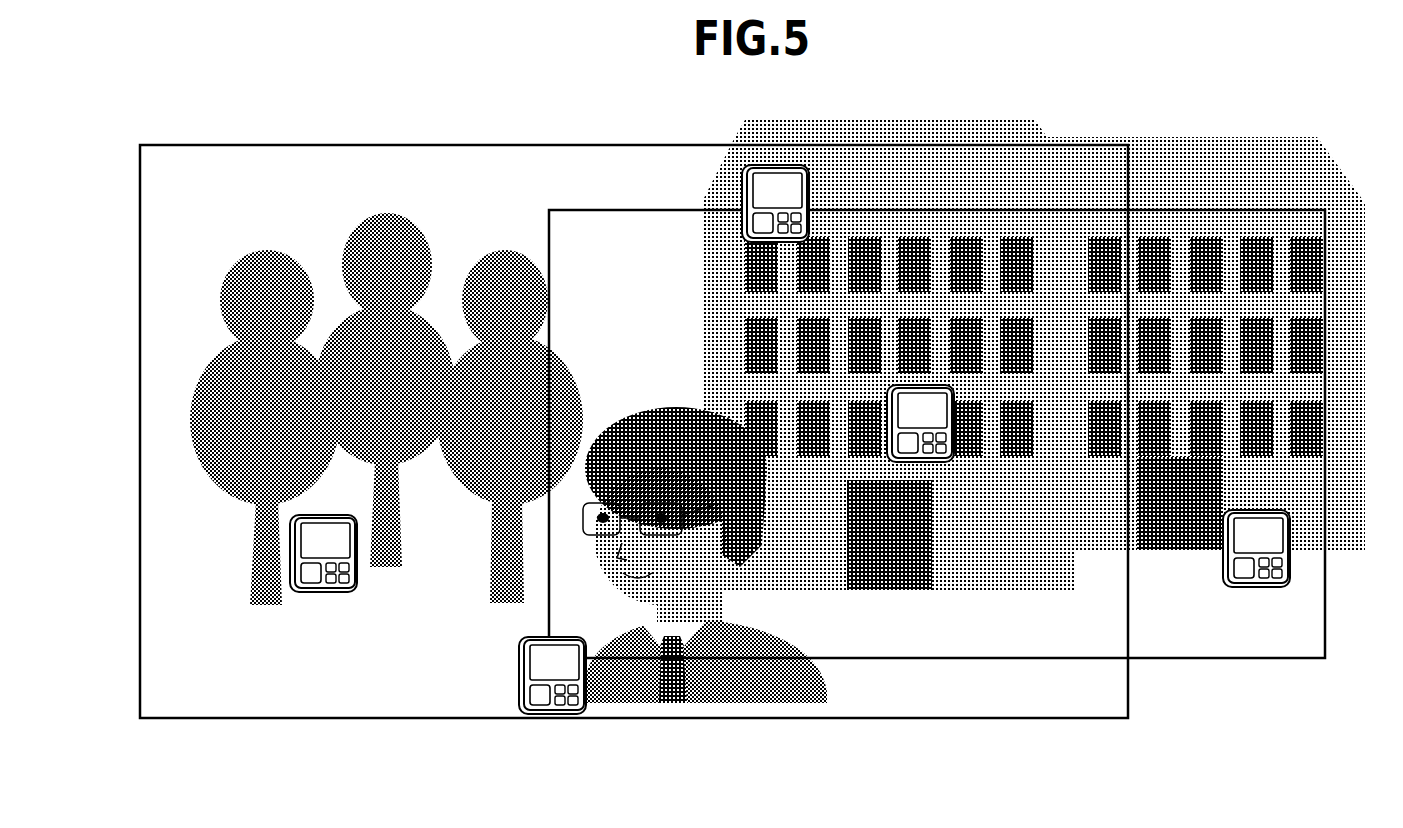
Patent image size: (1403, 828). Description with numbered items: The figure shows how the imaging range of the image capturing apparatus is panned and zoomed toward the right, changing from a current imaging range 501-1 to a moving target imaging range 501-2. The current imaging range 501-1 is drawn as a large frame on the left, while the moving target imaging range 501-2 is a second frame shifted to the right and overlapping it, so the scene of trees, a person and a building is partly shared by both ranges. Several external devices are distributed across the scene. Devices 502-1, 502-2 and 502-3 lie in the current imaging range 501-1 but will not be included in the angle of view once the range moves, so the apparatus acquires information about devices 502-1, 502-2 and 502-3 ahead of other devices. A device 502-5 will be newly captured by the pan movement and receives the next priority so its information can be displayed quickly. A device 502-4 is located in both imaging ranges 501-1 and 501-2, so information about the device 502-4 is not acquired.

The current imaging range 501-1 is at (337, 145).
The moving target imaging range 501-2 is at (1253, 210).
The device 502-1 is at (318, 593).
The device 502-2 is at (519, 680).
The device 502-3 is at (742, 182).
The device 502-4 is at (940, 462).
The device 502-5 is at (1258, 588).